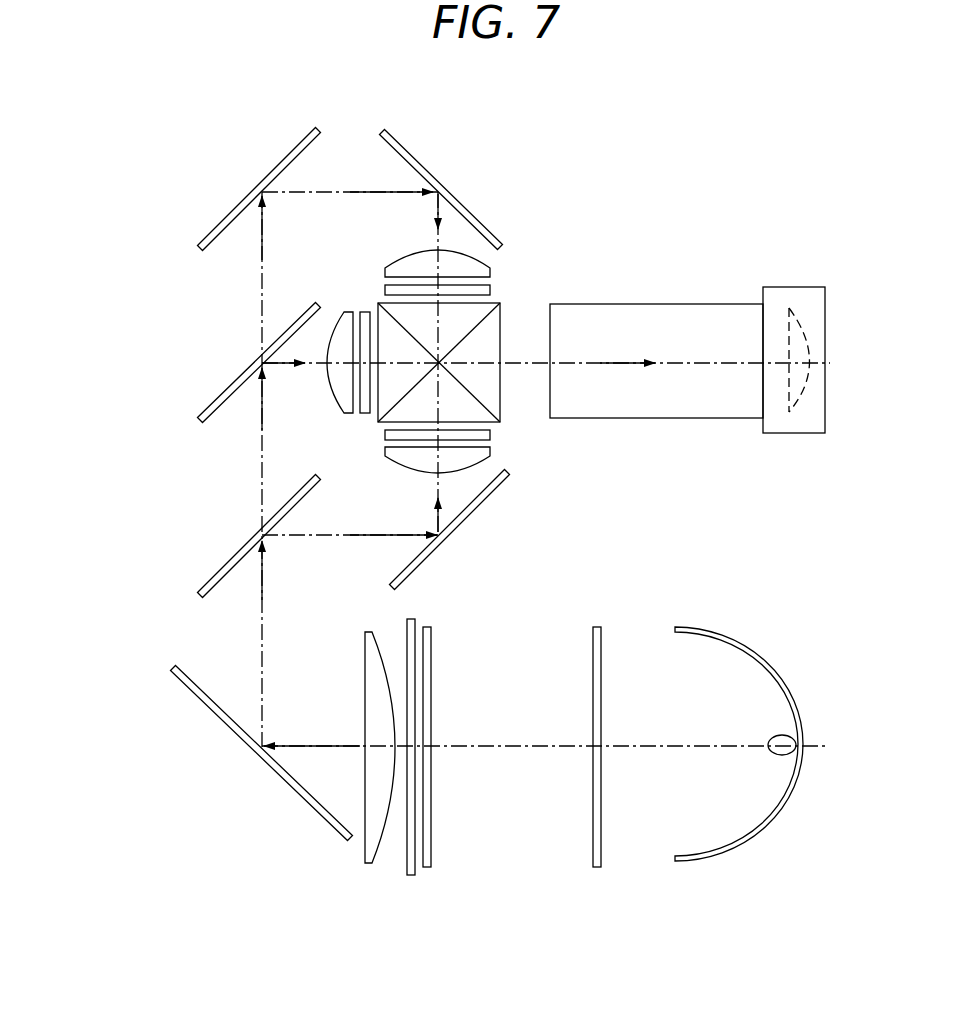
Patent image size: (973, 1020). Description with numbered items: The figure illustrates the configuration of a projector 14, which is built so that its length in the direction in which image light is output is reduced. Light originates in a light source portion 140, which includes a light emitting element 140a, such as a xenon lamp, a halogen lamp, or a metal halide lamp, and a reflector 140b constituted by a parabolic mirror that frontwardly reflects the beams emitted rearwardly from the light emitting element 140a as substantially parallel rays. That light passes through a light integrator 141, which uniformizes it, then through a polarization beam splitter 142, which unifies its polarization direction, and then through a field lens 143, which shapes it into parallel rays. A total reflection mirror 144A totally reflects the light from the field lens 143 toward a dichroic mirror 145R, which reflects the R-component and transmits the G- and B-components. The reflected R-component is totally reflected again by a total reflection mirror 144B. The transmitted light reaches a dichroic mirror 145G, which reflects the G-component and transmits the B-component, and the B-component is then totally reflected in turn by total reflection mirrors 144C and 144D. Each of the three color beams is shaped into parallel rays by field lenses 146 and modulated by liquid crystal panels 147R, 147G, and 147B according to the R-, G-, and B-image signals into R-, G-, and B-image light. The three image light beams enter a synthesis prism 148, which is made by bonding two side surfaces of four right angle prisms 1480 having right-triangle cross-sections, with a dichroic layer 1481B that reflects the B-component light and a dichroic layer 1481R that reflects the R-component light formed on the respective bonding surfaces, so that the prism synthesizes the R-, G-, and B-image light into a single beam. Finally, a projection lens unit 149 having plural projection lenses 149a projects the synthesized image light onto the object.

The projector 14 is at (843, 191).
The light source portion 140 is at (824, 744).
The light emitting element 140a is at (835, 764).
The reflector 140b is at (774, 672).
The light integrator 141 is at (593, 667).
The polarization beam splitter 142 is at (415, 870).
The field lens 143 is at (366, 855).
The total reflection mirror 144A is at (236, 735).
The total reflection mirror 144B is at (480, 507).
The total reflection mirror 144C is at (254, 189).
The total reflection mirror 144D is at (447, 190).
The dichroic mirror 145G is at (223, 391).
The dichroic mirror 145R is at (216, 574).
The field lenses 146 is at (397, 265).
The liquid crystal panel 147B is at (492, 277).
The liquid crystal panel 147G is at (379, 305).
The liquid crystal panel 147R is at (387, 430).
The synthesis prism 148 is at (386, 351).
The right angle prisms 1480 is at (397, 330).
The dichroic layer 1481R is at (417, 380).
The dichroic layer 1481B is at (486, 400).
The projection lens unit 149 is at (735, 343).
The projection lenses 149a is at (812, 380).